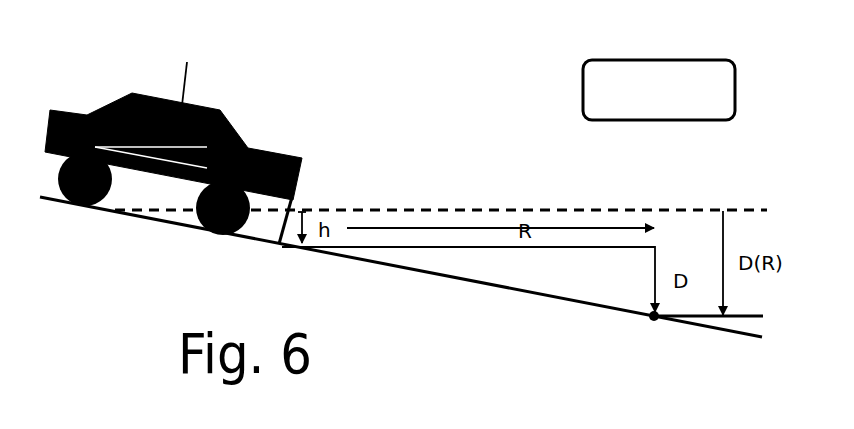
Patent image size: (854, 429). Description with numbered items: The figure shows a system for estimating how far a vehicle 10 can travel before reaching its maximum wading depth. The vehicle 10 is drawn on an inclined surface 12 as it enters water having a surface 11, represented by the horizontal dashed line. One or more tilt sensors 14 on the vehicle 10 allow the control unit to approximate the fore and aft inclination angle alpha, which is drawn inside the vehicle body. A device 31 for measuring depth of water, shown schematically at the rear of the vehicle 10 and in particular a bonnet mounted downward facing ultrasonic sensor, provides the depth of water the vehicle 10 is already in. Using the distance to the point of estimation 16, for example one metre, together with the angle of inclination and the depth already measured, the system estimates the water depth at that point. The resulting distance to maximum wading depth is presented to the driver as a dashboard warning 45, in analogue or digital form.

The vehicle 10 is at (175, 123).
The surface 11 is at (601, 211).
The inclined surface 12 is at (217, 232).
The tilt sensor 14 is at (174, 161).
The point of estimation 16 is at (654, 327).
The device for measuring depth of water 31 is at (308, 198).
The dashboard warning 45 is at (737, 90).